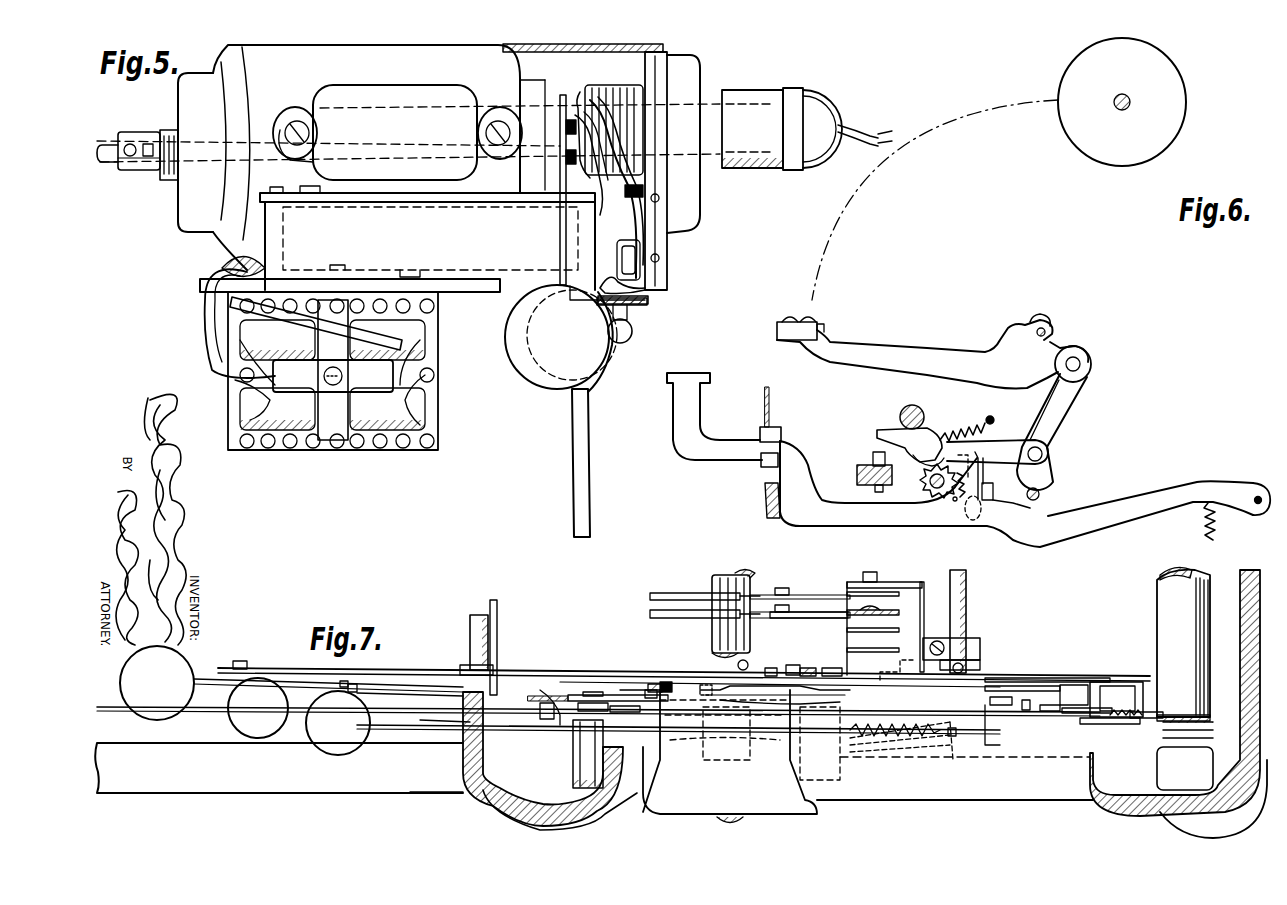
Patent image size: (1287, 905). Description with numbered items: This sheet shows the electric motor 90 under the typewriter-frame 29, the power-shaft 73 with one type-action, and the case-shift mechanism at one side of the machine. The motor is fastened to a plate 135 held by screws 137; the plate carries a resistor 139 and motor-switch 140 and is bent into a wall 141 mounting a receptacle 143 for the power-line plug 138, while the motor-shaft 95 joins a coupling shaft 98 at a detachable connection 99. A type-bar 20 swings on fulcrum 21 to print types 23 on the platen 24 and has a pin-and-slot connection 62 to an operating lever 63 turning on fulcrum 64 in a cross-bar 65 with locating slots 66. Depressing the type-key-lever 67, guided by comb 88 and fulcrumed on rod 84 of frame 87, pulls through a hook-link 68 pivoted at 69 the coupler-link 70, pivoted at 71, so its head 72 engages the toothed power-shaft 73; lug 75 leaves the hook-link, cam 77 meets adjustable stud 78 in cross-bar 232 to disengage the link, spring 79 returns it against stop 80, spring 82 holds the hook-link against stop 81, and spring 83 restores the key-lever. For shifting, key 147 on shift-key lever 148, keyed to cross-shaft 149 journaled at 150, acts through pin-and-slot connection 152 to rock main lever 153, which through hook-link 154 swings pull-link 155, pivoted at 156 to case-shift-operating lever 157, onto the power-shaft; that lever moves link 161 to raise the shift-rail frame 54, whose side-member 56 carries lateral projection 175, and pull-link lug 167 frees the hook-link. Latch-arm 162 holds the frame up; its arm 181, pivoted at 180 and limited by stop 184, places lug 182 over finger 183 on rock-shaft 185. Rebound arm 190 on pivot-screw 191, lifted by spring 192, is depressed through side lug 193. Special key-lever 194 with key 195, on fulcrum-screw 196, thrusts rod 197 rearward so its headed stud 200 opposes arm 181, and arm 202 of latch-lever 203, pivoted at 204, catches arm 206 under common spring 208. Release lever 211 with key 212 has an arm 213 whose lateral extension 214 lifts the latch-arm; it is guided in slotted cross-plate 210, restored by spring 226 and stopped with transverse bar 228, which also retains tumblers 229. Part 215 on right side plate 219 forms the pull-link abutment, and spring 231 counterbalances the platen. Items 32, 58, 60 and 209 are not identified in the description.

In FIG. 6, the type-bar 20 is at (917, 354).
In FIG. 6, the fulcrum 21 is at (1038, 334).
In FIG. 6, the upper and lower case types 23 is at (803, 320).
In FIG. 6, the platen 24 is at (999, 169).
In FIG. 5, the typewriter-frame 29 is at (573, 423).
In FIG. 7, the typewriter-frame 29 is at (594, 771).
In FIG. 6, the hook 32 is at (1030, 324).
In FIG. 7, the shift-rail frame 54 is at (1152, 620).
In FIG. 7, the shift-rail frame side-member 56 is at (1158, 725).
In FIG. 7, the key stem 58 is at (1183, 642).
In FIG. 7, the block 60 is at (1212, 760).
In FIG. 6, the pin-and-slot connection 62 is at (1066, 365).
In FIG. 6, the operating lever 63 is at (1052, 432).
In FIG. 7, the operating lever 63 is at (882, 610).
In FIG. 6, the fulcrum-rod 64 is at (1039, 493).
In FIG. 7, the fulcrum-rod 64 is at (863, 577).
In FIG. 7, the cross-bar 65 is at (950, 627).
In FIG. 7, the lever-locating slots 66 is at (890, 640).
In FIG. 6, the type-key-lever 67 is at (960, 460).
In FIG. 6, the hook-link 68 is at (984, 472).
In FIG. 6, the hook-link pivot 69 is at (982, 510).
In FIG. 6, the coupler-link 70 is at (999, 442).
In FIG. 7, the coupler-link 70 is at (757, 610).
In FIG. 6, the coupler-link pivot 71 is at (1043, 455).
In FIG. 6, the coupler-link head 72 is at (916, 466).
In FIG. 7, the coupler-link head 72 is at (660, 612).
In FIG. 6, the power-shaft 73 is at (926, 484).
In FIG. 7, the power-shaft 73 is at (712, 584).
In FIG. 6, the coupler-link lug 75 is at (956, 464).
In FIG. 7, the coupler-link lug 75 is at (800, 614).
In FIG. 6, the cam 77 is at (908, 435).
In FIG. 6, the adjustable stud 78 is at (877, 456).
In FIG. 6, the spring 79 is at (960, 428).
In FIG. 6, the stop 80 is at (923, 415).
In FIG. 6, the key-lever stop 81 is at (993, 490).
In FIG. 6, the spring 82 is at (955, 500).
In FIG. 6, the key-lever spring 83 is at (1198, 521).
In FIG. 6, the fulcrum rod 84 is at (1256, 486).
In FIG. 7, the frame 87 is at (953, 735).
In FIG. 6, the comb 88 is at (770, 413).
In FIG. 7, the comb 88 is at (498, 644).
In FIG. 5, the electric motor 90 is at (408, 160).
In FIG. 5, the motor-shaft 95 is at (248, 143).
In FIG. 5, the coupling shaft 98 is at (105, 163).
In FIG. 5, the detachable connection 99 is at (145, 140).
In FIG. 5, the plate 135 is at (440, 280).
In FIG. 5, the screws 137 is at (552, 270).
In FIG. 5, the power-line plug 138 is at (738, 90).
In FIG. 5, the resistor 139 is at (321, 359).
In FIG. 5, the motor-switch 140 is at (628, 318).
In FIG. 5, the wall 141 is at (670, 80).
In FIG. 5, the receptacle 143 is at (600, 86).
In FIG. 7, the case-shift key 147 is at (138, 713).
In FIG. 7, the shift-key lever 148 is at (320, 684).
In FIG. 7, the cross-shaft 149 is at (469, 628).
In FIG. 7, the journal 150 is at (490, 766).
In FIG. 7, the pin-and-slot connection 152 is at (248, 666).
In FIG. 7, the main lever 153 is at (555, 680).
In FIG. 7, the hook-link 154 is at (790, 664).
In FIG. 7, the pull-link 155 is at (728, 672).
In FIG. 7, the pull-link pivot 156 is at (888, 676).
In FIG. 7, the case-shift-operating lever 157 is at (832, 667).
In FIG. 7, the link 161 is at (1045, 678).
In FIG. 7, the latch-arm 162 is at (1100, 719).
In FIG. 7, the pull-link lug 167 is at (770, 667).
In FIG. 7, the lateral projection 175 is at (1108, 682).
In FIG. 7, the arm pivot 180 is at (1050, 712).
In FIG. 7, the arm 181 is at (1085, 714).
In FIG. 7, the lug 182 is at (1075, 686).
In FIG. 7, the finger 183 is at (1022, 686).
In FIG. 7, the stop 184 is at (1027, 712).
In FIG. 7, the rock-shaft 185 is at (966, 600).
In FIG. 7, the rebound-preventing arm 190 is at (832, 690).
In FIG. 7, the pivot-screw 191 is at (656, 682).
In FIG. 7, the spring 192 is at (748, 660).
In FIG. 7, the side lug 193 is at (808, 667).
In FIG. 7, the special key-lever 194 is at (392, 694).
In FIG. 7, the key 195 is at (230, 724).
In FIG. 7, the fulcrum-screw 196 is at (598, 700).
In FIG. 7, the rod 197 is at (622, 705).
In FIG. 7, the headed stud 200 is at (1000, 697).
In FIG. 7, the latch-lever arm 202 is at (541, 712).
In FIG. 7, the latch-lever 203 is at (605, 726).
In FIG. 7, the fixed pivot 204 is at (573, 769).
In FIG. 7, the special key-lever arm 206 is at (532, 697).
In FIG. 7, the common spring 208 is at (546, 723).
In FIG. 7, the lug 209 is at (355, 686).
In FIG. 6, the slotted cross-plate 210 is at (781, 510).
In FIG. 7, the release lever 211 is at (428, 716).
In FIG. 7, the key 212 is at (355, 750).
In FIG. 7, the release lever arm 213 is at (962, 733).
In FIG. 7, the lateral extension 214 is at (989, 726).
In FIG. 7, the abutment part 215 is at (640, 688).
In FIG. 7, the right side plate 219 is at (565, 696).
In FIG. 7, the spring 226 is at (897, 760).
In FIG. 6, the transverse bar 228 is at (765, 500).
In FIG. 6, the tumblers 229 is at (763, 470).
In FIG. 7, the spring 231 is at (1208, 725).
In FIG. 6, the cross-bar 232 is at (857, 473).